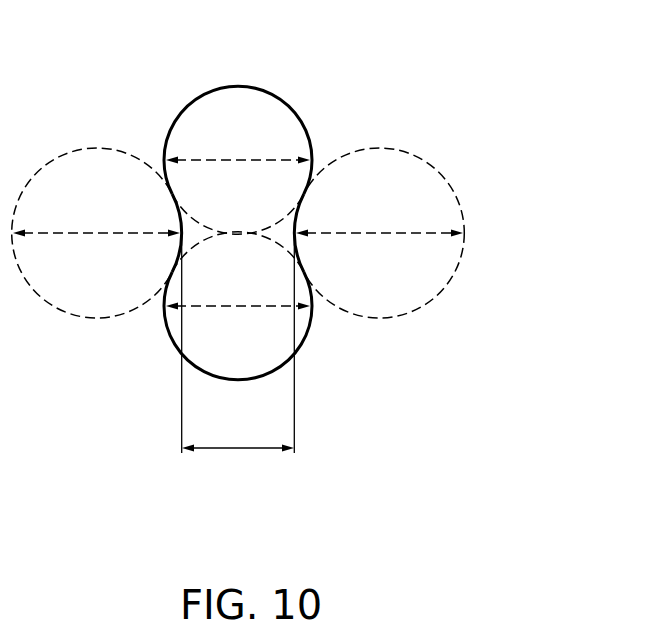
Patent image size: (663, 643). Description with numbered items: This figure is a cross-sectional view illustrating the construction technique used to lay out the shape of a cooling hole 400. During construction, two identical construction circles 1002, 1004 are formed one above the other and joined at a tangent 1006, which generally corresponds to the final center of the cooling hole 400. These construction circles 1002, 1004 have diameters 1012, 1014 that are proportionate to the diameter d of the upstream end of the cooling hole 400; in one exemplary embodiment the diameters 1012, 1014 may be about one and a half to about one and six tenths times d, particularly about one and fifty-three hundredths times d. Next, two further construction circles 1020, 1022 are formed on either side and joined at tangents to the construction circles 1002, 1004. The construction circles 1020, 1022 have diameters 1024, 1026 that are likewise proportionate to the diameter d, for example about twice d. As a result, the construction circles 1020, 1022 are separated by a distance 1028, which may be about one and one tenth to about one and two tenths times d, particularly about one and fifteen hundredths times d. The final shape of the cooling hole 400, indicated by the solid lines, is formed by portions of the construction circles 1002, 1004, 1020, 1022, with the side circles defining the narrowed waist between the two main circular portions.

The cooling hole 400 is at (492, 140).
The construction circle 1002 is at (212, 87).
The construction circle 1004 is at (237, 380).
The tangent 1006 is at (238, 236).
The diameter 1012 is at (245, 157).
The diameter 1014 is at (235, 309).
The construction circle 1020 is at (70, 147).
The construction circle 1022 is at (406, 147).
The diameter 1024 is at (96, 231).
The diameter 1026 is at (380, 231).
The distance 1028 is at (238, 452).